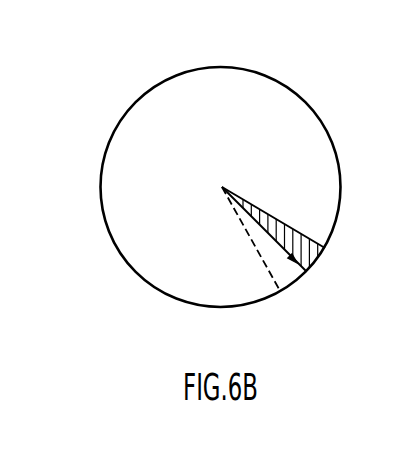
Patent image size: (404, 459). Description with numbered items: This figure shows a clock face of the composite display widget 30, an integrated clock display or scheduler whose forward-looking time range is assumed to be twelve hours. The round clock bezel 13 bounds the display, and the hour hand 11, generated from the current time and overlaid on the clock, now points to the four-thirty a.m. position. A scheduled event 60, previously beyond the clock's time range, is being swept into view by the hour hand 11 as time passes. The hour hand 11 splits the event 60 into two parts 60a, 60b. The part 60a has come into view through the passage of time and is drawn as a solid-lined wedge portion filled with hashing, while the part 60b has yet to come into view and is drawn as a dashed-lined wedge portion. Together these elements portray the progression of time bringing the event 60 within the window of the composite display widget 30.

The composite display widget 30 is at (208, 179).
The clock bezel 13 is at (115, 245).
The event 60 is at (291, 229).
The part of event that has come into view 60a is at (289, 222).
The part of event yet to come into view 60b is at (252, 240).
The hour hand 11 is at (283, 257).